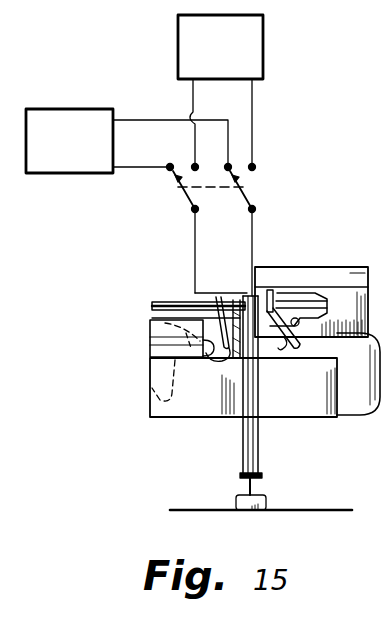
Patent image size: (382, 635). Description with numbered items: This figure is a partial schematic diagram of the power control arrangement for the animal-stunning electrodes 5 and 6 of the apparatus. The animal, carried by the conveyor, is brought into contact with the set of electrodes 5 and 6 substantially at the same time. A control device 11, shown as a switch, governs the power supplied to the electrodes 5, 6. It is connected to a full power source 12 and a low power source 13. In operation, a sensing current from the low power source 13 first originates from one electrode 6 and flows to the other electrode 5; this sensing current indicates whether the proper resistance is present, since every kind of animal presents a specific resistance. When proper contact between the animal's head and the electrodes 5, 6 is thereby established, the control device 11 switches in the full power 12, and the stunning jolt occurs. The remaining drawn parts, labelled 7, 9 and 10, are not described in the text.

The electrode 5 is at (218, 297).
The electrode 6 is at (270, 290).
The arm 7 is at (212, 302).
The shaft head 9 is at (237, 296).
The housing block 10 is at (278, 300).
The control device 11 is at (251, 193).
The full power source 12 is at (240, 55).
The low power source 13 is at (80, 153).